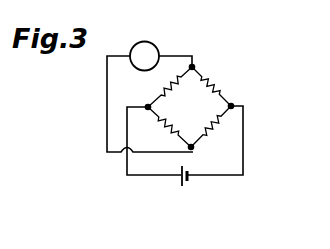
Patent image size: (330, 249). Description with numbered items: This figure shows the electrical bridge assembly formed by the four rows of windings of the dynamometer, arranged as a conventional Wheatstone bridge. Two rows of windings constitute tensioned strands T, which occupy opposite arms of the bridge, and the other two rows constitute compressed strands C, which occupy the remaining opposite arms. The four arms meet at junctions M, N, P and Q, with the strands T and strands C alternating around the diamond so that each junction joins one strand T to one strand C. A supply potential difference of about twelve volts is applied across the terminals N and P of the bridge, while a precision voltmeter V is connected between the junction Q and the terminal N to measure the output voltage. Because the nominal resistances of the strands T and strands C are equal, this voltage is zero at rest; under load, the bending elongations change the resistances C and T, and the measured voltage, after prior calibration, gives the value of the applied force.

The precision voltmeter V is at (144, 56).
The tensioned strands T is at (189, 107).
The compressed strands C is at (189, 108).
The bridge junction M is at (143, 98).
The terminal N is at (196, 153).
The terminal P is at (234, 96).
The terminal Q is at (197, 65).